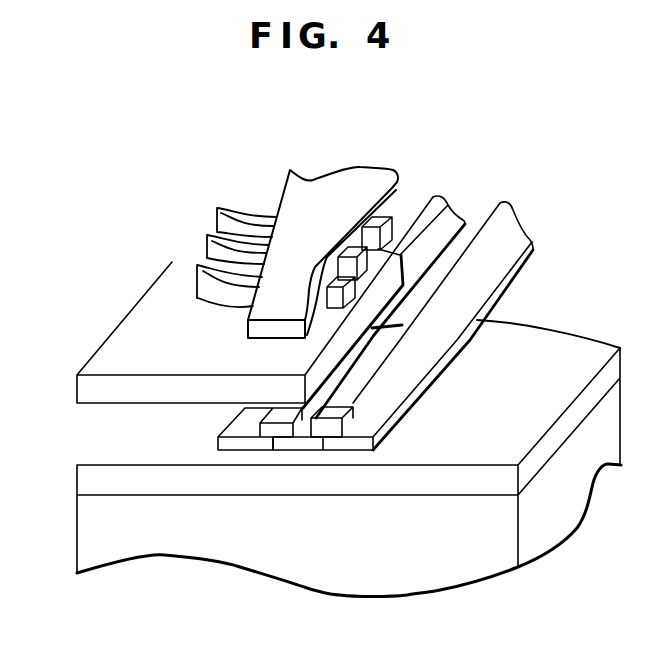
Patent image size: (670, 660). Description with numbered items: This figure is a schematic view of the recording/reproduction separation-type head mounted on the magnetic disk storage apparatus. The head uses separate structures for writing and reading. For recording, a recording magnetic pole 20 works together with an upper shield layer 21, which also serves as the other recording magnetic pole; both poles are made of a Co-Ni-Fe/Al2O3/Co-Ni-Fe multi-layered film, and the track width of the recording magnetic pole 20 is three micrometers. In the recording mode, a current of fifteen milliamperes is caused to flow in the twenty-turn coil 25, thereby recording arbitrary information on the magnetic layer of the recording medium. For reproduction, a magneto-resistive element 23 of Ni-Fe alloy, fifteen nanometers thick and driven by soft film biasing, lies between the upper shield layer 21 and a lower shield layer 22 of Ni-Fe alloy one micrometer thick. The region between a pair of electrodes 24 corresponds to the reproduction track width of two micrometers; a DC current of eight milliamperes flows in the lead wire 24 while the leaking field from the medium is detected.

The recording magnetic pole 20 is at (313, 208).
The upper shield layer 21 is at (118, 392).
The lower shield layer 22 is at (113, 483).
The magneto-resistive element 23 is at (302, 445).
The electrodes 24 is at (238, 445).
The coil 25 is at (396, 238).